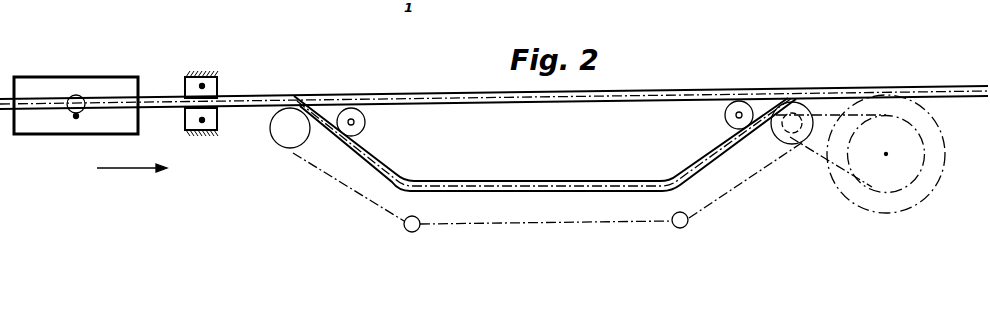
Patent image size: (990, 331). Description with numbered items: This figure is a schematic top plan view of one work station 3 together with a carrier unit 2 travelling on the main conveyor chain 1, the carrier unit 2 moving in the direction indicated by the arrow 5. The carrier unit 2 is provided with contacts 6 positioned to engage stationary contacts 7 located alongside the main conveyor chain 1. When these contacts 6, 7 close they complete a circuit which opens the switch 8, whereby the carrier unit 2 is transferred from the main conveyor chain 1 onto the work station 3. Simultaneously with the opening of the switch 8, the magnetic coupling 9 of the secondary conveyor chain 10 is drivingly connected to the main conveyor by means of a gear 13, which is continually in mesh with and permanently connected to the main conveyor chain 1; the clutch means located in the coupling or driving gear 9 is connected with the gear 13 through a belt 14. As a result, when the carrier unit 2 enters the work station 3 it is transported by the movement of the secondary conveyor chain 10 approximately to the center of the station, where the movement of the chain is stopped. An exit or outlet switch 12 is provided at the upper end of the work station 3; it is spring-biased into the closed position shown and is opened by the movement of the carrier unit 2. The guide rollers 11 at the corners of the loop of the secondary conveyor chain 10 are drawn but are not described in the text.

The main conveyor chain 1 is at (452, 96).
The carrier unit 2 is at (44, 127).
The work station 3 is at (538, 173).
The arrow 5 is at (127, 169).
The contacts 6 is at (80, 96).
The stationary contacts 7 is at (202, 85).
The switch 8 is at (349, 109).
The magnetic coupling 9 is at (783, 133).
The secondary conveyor chain 10 is at (619, 230).
The loop guide rollers 11 is at (408, 231).
The exit switch 12 is at (754, 99).
The gear 13 is at (867, 209).
The belt 14 is at (820, 154).